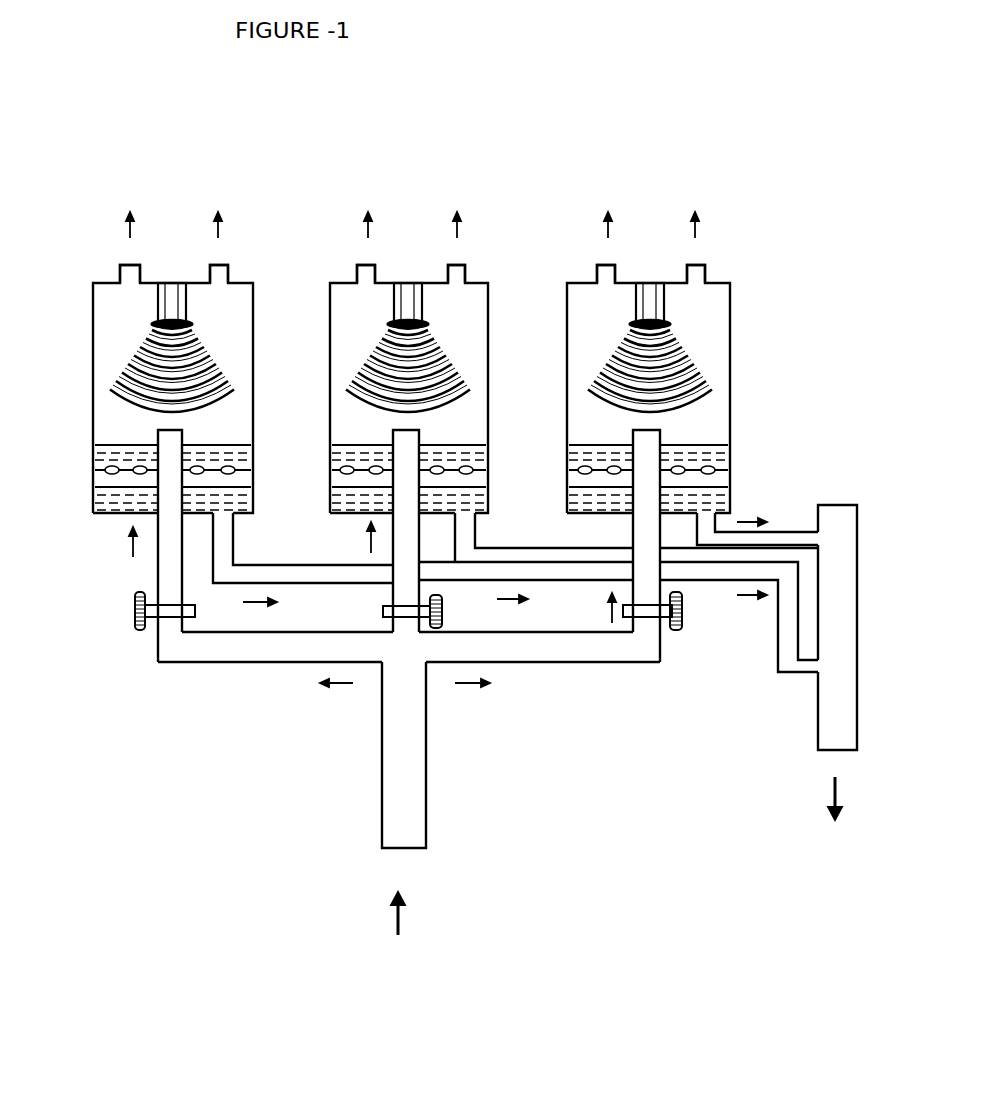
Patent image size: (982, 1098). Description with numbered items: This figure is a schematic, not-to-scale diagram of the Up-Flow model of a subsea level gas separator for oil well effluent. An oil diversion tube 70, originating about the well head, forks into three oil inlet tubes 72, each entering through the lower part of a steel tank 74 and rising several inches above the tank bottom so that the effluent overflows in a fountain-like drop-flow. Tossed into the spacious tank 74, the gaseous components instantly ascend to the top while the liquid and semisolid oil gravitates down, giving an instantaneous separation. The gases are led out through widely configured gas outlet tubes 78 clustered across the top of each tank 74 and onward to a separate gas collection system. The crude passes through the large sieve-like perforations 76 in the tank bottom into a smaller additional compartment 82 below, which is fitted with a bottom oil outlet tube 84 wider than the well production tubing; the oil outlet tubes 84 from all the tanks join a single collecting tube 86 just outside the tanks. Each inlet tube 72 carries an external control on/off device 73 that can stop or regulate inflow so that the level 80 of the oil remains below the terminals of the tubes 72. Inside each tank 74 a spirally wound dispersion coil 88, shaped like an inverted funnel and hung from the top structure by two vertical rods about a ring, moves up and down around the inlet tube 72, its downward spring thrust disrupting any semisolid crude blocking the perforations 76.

The oil diversion tube 70 is at (410, 772).
The oil inlet tube 72 is at (402, 590).
The external control on/off device 73 is at (135, 625).
The tank 74 is at (411, 389).
The sieve-like perforation 76 is at (137, 474).
The gas outlet tube 78 is at (357, 267).
The level of the oil 80 is at (132, 443).
The additional compartment 82 is at (97, 470).
The oil outlet tube 84 is at (735, 538).
The collecting tube 86 is at (817, 738).
The dispersion coil 88 is at (147, 347).